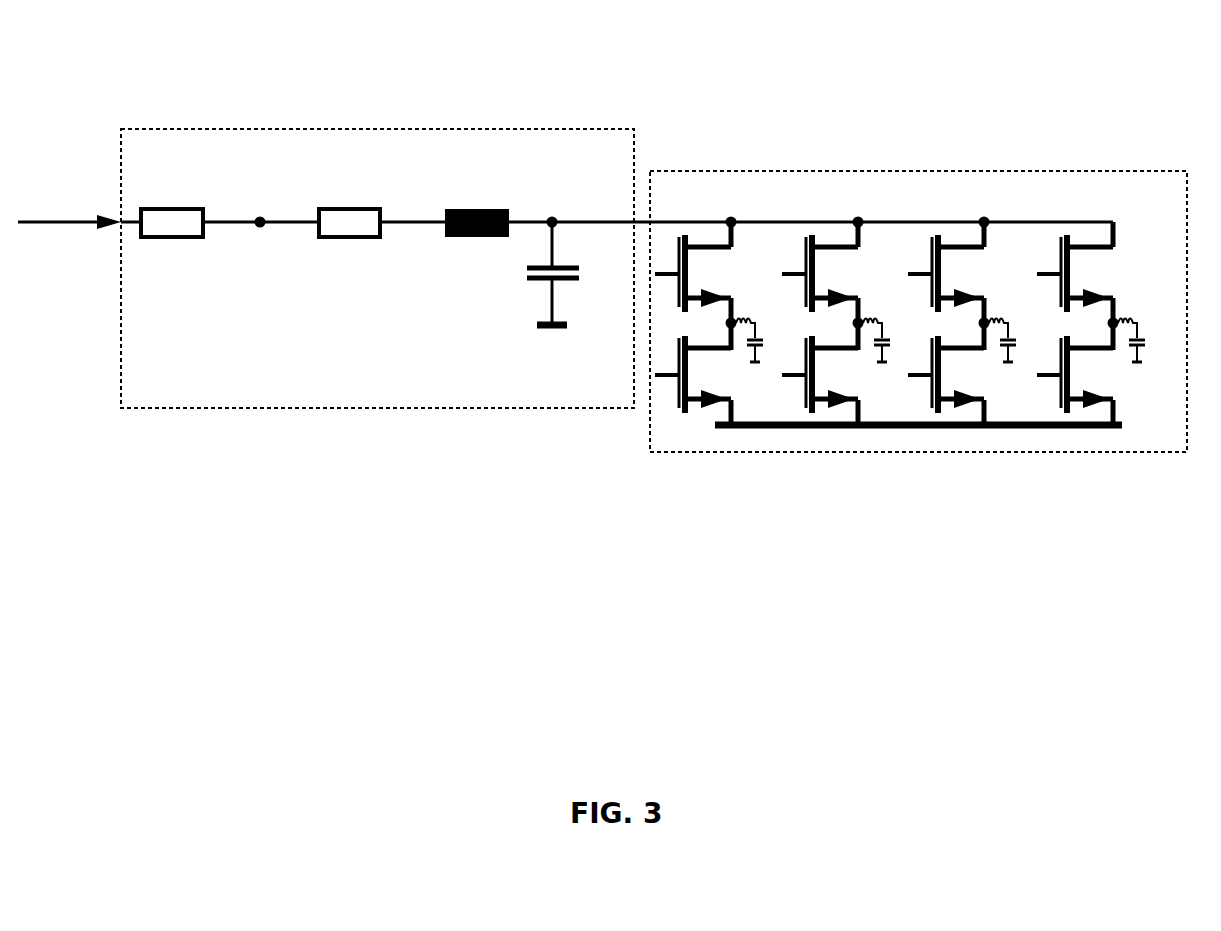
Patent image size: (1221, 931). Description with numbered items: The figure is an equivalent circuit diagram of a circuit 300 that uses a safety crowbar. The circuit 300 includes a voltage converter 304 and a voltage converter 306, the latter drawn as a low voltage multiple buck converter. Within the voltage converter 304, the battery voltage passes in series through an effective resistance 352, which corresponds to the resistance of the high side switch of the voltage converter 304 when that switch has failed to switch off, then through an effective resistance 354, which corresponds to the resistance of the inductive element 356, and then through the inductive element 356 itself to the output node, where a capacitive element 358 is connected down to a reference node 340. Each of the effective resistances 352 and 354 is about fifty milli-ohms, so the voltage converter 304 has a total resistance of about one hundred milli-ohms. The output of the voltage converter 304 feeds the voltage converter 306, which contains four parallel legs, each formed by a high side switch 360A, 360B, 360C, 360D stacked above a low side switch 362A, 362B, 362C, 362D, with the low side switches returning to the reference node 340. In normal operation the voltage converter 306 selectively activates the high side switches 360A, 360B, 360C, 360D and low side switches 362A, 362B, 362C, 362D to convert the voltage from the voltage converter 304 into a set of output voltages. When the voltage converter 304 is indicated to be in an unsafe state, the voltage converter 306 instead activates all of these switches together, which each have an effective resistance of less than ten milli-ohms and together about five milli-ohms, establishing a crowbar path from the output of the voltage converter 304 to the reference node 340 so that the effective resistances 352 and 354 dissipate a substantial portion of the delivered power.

The circuit 300 is at (1110, 36).
The voltage converter 304 is at (341, 128).
The voltage converter 306 is at (868, 170).
The reference node 340 is at (568, 327).
The effective resistance 352 is at (172, 208).
The effective resistance 354 is at (348, 208).
The inductive element 356 is at (455, 208).
The capacitive element 358 is at (558, 240).
The high side switch 360A is at (690, 262).
The high side switch 360B is at (817, 262).
The high side switch 360C is at (943, 262).
The high side switch 360D is at (1072, 262).
The low side switch 362A is at (690, 367).
The low side switch 362B is at (817, 367).
The low side switch 362C is at (943, 367).
The low side switch 362D is at (1072, 367).